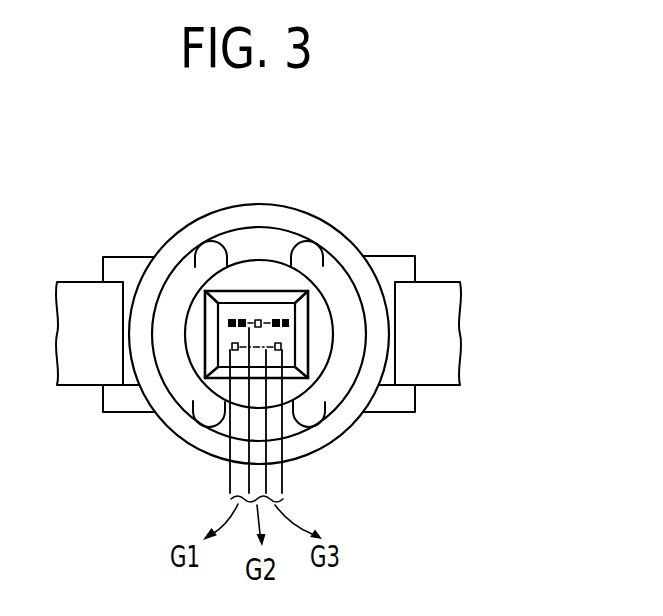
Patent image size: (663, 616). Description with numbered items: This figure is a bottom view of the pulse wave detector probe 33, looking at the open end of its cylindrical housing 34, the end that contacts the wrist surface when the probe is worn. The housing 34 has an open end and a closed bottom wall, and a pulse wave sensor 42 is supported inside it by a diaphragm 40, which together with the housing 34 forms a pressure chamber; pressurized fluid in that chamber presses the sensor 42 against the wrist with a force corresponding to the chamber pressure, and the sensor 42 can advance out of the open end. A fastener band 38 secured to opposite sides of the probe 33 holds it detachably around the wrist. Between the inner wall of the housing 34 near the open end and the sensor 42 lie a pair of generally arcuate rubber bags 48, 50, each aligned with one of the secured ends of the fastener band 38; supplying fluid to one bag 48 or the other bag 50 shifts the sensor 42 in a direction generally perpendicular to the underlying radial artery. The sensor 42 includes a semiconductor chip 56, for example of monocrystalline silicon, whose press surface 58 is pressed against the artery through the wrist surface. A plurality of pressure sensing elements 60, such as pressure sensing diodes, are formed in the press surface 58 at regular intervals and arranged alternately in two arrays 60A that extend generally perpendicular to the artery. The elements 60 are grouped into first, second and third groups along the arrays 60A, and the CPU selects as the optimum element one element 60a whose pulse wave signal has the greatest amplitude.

The pulse wave detector probe 33 is at (342, 178).
The cylindrical housing 34 is at (268, 214).
The diaphragm 40 is at (287, 237).
The pulse wave sensor 42 is at (243, 313).
The rubber bag 48 is at (190, 263).
The rubber bag 50 is at (360, 337).
The fastener band 38 is at (85, 355).
The semiconductor chip 56 is at (211, 357).
The press surface 58 is at (281, 301).
The pressure sensing elements 60 is at (283, 350).
The selected pressure sensing element 60a is at (262, 327).
The element arrays 60A is at (255, 277).